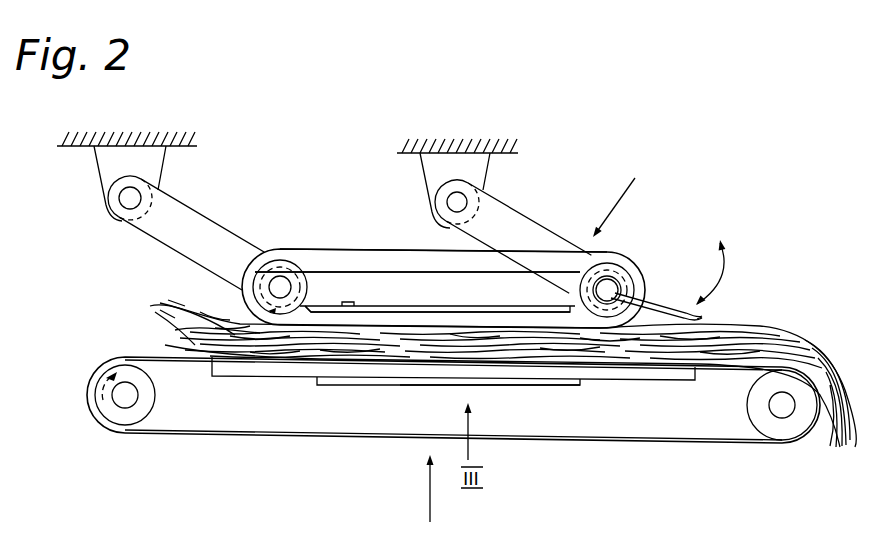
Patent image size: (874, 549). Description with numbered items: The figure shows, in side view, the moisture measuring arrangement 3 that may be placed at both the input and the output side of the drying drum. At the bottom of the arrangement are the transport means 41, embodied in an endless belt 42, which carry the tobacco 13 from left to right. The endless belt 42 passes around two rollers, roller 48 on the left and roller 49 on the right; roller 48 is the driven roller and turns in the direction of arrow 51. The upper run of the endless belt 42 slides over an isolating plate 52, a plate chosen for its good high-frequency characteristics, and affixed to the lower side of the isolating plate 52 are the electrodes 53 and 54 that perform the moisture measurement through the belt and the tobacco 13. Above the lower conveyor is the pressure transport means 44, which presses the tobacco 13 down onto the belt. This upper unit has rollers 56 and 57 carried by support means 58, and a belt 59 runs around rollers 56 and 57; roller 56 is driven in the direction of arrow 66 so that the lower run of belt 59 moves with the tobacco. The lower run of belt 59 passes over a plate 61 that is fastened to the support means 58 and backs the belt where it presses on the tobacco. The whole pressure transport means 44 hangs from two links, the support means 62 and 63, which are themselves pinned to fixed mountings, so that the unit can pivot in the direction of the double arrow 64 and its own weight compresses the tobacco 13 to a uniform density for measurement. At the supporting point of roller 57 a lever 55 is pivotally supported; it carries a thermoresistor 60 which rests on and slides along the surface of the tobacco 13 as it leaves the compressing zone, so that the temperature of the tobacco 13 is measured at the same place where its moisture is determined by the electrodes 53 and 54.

The moisture measuring arrangement 3 is at (358, 156).
The tobacco 13 is at (150, 323).
The transport means 41 is at (437, 502).
The endless belt 42 is at (170, 436).
The pressure transport means 44 is at (626, 198).
The roller 48 is at (105, 417).
The roller 49 is at (748, 405).
The arrow 51 is at (100, 388).
The isolating plate 52 is at (636, 377).
The electrode 53 is at (380, 393).
The electrode 54 is at (501, 390).
The lever 55 is at (652, 300).
The roller 56 is at (287, 260).
The roller 57 is at (620, 257).
The support means 58 is at (370, 280).
The belt 59 is at (346, 250).
The thermoresistor 60 is at (703, 318).
The upper pressing plate 61 is at (440, 318).
The support means 62 is at (183, 213).
The support means 63 is at (503, 212).
The double arrow 64 is at (727, 267).
The arrow 66 is at (258, 272).